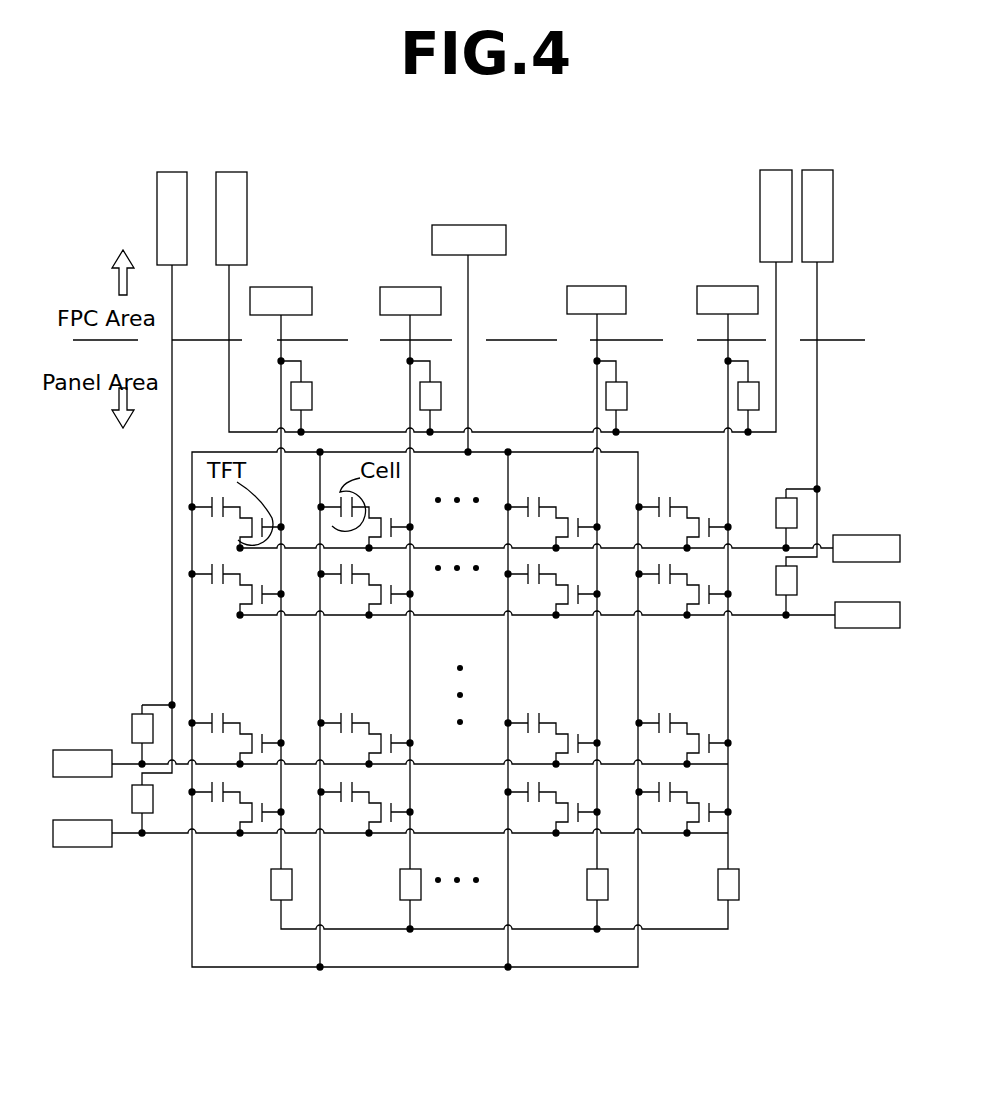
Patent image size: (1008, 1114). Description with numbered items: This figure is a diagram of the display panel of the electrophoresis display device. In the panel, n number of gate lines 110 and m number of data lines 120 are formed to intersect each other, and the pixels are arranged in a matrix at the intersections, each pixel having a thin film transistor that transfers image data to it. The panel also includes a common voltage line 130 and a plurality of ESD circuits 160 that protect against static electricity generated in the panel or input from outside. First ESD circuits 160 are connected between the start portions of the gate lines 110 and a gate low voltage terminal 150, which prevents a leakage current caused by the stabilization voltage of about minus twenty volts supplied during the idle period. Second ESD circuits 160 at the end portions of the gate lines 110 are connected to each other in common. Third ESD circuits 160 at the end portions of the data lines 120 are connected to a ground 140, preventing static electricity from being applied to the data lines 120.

The gate lines 110 is at (281, 690).
The data lines 120 is at (425, 834).
The common voltage line 130 is at (470, 308).
The ground (GND) 140 is at (157, 228).
The VGL terminal 150 is at (247, 228).
The ESD circuits 160 is at (312, 393).